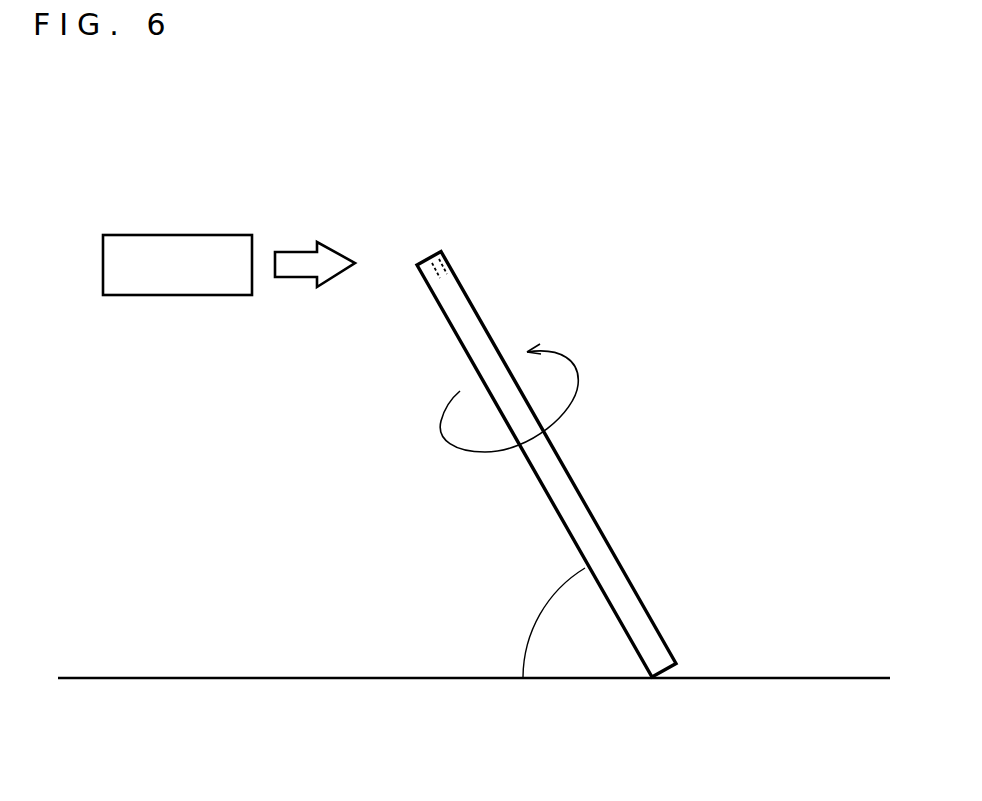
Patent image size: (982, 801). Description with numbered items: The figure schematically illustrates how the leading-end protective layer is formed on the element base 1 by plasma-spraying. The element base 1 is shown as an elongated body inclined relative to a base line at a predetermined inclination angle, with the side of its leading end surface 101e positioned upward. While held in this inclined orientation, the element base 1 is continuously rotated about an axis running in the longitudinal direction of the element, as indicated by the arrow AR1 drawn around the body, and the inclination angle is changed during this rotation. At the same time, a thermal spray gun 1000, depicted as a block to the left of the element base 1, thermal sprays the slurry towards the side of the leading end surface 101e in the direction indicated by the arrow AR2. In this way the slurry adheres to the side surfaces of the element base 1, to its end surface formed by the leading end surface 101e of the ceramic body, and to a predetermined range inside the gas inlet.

The element base 1 is at (572, 508).
The leading end surface 101e is at (420, 262).
The thermal spray gun 1000 is at (162, 277).
The arrow AR1 is at (577, 364).
The arrow AR2 is at (293, 260).